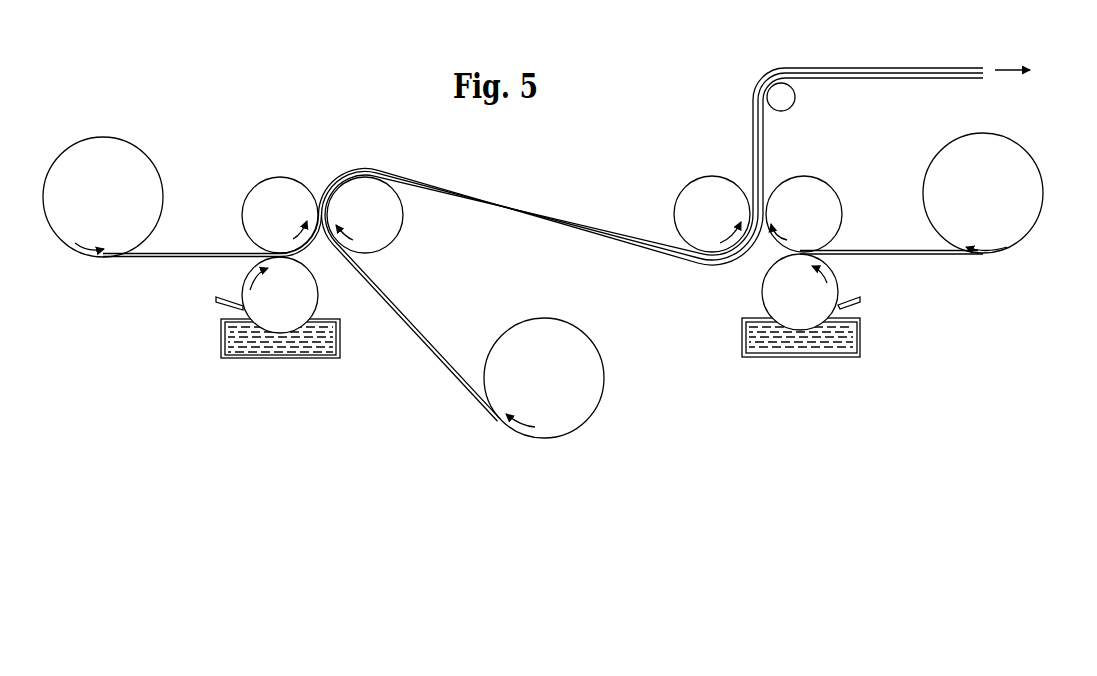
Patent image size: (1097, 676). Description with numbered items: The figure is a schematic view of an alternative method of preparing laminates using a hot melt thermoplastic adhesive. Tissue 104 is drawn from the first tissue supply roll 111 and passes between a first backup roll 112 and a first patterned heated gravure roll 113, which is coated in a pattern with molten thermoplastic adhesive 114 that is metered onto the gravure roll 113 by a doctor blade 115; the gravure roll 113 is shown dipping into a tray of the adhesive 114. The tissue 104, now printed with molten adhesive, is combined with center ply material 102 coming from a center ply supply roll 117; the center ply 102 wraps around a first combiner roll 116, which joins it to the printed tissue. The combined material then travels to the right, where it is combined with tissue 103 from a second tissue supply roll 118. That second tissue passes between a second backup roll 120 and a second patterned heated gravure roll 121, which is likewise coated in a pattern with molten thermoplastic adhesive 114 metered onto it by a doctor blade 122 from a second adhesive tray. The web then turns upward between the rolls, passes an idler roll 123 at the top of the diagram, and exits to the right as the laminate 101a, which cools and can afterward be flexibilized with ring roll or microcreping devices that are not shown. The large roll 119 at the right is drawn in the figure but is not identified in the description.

The laminate 101a is at (955, 64).
The center ply material 102 is at (526, 218).
The tissue 103 is at (907, 250).
The tissue 104 is at (209, 253).
The first tissue supply roll 111 is at (110, 217).
The first backup roll 112 is at (295, 217).
The first patterned heated gravure roll 113 is at (298, 302).
The molten thermoplastic adhesive 114 is at (303, 343).
The doctor blade 115 is at (216, 300).
The first combiner roll 116 is at (378, 216).
The center ply supply roll 117 is at (555, 385).
The second tissue supply roll 118 is at (722, 216).
The supply roll of third web 119 is at (1000, 216).
The second backup roll 120 is at (825, 216).
The second patterned heated gravure roll 121 is at (808, 301).
The doctor blade 122 is at (860, 300).
The idler roll 123 is at (782, 97).